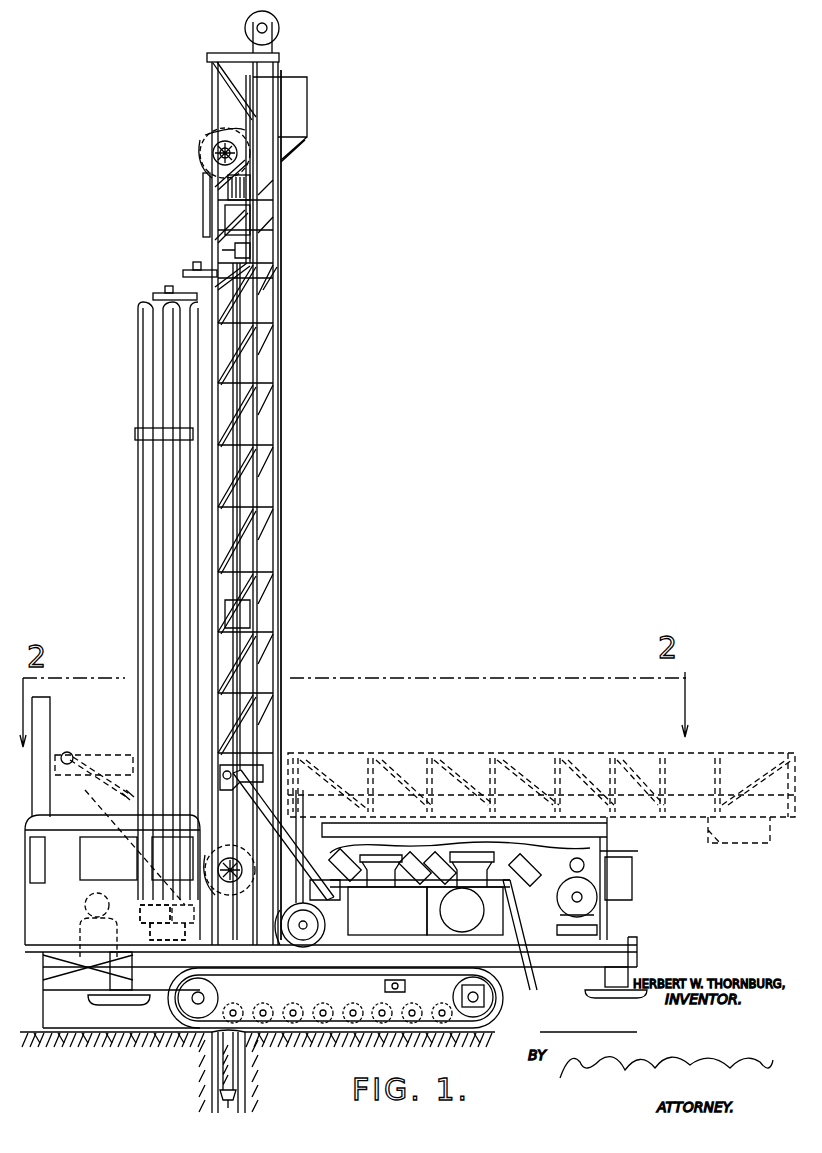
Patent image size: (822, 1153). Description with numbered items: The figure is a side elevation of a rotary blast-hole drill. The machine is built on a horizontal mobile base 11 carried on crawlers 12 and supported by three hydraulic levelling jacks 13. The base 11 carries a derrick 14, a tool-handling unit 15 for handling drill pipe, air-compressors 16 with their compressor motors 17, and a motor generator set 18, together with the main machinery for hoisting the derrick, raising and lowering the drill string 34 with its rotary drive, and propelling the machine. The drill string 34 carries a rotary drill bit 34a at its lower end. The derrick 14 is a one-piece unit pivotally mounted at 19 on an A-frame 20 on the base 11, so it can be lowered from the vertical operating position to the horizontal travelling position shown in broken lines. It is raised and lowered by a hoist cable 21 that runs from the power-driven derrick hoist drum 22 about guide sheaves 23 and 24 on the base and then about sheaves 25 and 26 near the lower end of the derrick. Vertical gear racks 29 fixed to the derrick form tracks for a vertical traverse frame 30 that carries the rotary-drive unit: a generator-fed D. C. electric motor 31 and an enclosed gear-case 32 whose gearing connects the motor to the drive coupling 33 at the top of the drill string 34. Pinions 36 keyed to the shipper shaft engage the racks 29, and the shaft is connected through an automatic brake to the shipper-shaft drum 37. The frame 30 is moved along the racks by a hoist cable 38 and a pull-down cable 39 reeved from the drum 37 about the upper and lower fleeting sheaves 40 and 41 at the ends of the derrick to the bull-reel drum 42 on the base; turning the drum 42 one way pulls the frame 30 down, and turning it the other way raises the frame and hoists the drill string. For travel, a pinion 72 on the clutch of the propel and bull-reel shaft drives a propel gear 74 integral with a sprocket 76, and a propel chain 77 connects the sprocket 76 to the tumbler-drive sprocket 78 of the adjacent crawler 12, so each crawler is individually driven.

The horizontal mobile base 11 is at (560, 965).
The crawlers 12 is at (500, 1005).
The hydraulic levelling jacks 13 is at (117, 968).
The derrick 14 is at (270, 446).
The tool-handling unit 15 is at (170, 474).
The air-compressors 16 is at (472, 855).
The compressor motors 17 is at (460, 905).
The motor generator set 18 is at (568, 890).
The pivot 19 is at (240, 773).
The A-frame 20 is at (272, 790).
The hoist cable 21 is at (88, 798).
The derrick hoist drum 22 is at (360, 955).
The guide sheave 23 is at (215, 970).
The guide sheave 24 is at (200, 958).
The sheave 25 is at (68, 752).
The sheave 26 is at (128, 797).
The vertical gear racks 29 is at (232, 110).
The vertical traverse frame 30 is at (205, 193).
The D. C. electric motor 31 is at (250, 183).
The gear-case 32 is at (232, 224).
The drive coupling 33 is at (236, 250).
The drill string 34 is at (265, 590).
The rotary drill bit 34a is at (230, 1111).
The pinions 36 is at (258, 150).
The shipper-shaft drum 37 is at (212, 147).
The hoist cable 38 is at (280, 526).
The pull-down cable 39 is at (250, 621).
The upper fleeting sheave 40 is at (279, 30).
The lower fleeting sheave 41 is at (286, 918).
The bull-reel drum 42 is at (292, 886).
The pinion 72 is at (295, 875).
The propel gear 74 is at (338, 1033).
The sprocket 76 is at (292, 1030).
The propel chain 77 is at (245, 1040).
The tumbler-drive sprocket 78 is at (193, 1005).